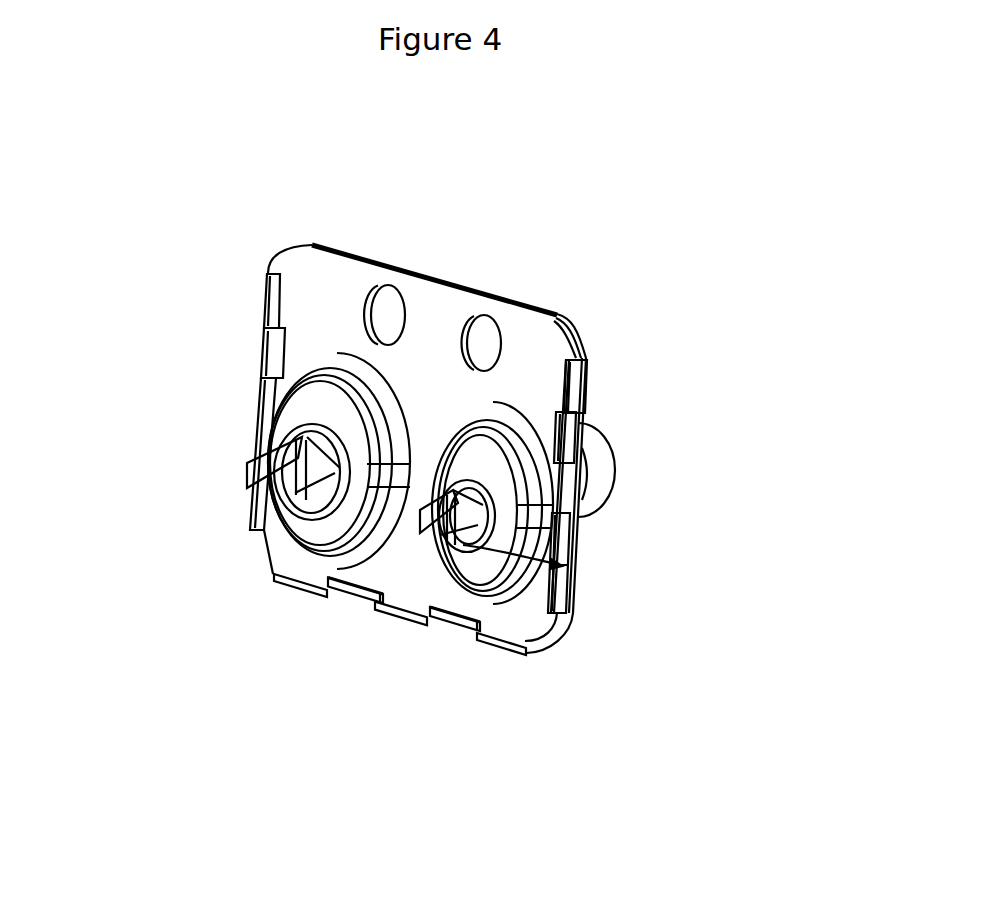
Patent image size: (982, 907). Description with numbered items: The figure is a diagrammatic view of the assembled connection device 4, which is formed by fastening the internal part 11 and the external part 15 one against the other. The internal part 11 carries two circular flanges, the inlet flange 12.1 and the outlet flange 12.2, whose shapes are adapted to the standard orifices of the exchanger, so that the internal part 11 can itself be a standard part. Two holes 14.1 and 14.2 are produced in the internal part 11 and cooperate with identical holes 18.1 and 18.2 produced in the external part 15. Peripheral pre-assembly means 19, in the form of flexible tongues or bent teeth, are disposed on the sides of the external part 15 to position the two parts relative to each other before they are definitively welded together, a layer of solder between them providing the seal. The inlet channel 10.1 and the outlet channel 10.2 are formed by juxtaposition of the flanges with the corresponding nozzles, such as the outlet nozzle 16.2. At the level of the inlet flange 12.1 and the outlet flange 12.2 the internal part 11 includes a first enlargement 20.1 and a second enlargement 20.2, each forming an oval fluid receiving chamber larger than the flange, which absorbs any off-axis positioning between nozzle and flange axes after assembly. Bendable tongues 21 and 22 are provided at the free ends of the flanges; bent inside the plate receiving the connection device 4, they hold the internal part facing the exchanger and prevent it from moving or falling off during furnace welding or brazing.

The connection device 4 is at (748, 220).
The internal part 11 is at (296, 270).
The first enlargement 20.1 is at (318, 403).
The second enlargement 20.2 is at (477, 567).
The external part 15 is at (600, 393).
The pre-assembly means 19 is at (560, 533).
The outlet nozzle 16.2 is at (598, 467).
The inlet channel 10.1 is at (264, 532).
The outlet channel 10.2 is at (410, 613).
The first hole of the external part 18.1 is at (397, 312).
The second hole of the external part 18.2 is at (487, 330).
The first hole of the internal part 14.1 is at (393, 328).
The second hole of the internal part 14.2 is at (488, 352).
The inlet flange 12.1 is at (307, 425).
The outlet flange 12.2 is at (570, 603).
The tongue 21 is at (247, 473).
The tongue 22 is at (305, 500).